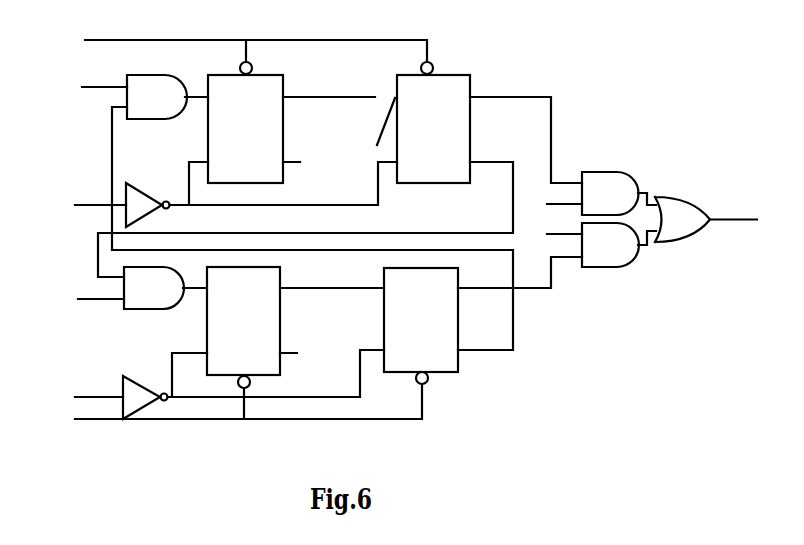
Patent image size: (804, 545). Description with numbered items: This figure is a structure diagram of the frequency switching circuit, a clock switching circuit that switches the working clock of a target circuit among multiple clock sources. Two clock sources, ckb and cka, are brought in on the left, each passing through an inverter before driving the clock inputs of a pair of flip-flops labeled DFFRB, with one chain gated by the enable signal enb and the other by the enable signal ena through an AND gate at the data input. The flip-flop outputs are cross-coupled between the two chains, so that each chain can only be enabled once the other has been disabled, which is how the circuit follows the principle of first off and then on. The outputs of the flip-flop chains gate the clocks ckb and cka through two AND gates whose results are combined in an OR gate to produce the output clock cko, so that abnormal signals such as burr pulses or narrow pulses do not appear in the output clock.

The enable signal b enb is at (89, 87).
The enable signal a ena is at (88, 299).
The clock signal b ckb is at (316, 200).
The clock signal a cka is at (317, 312).
The output clock signal cko is at (733, 209).
The D flip-flop with reset DFFRB is at (338, 225).